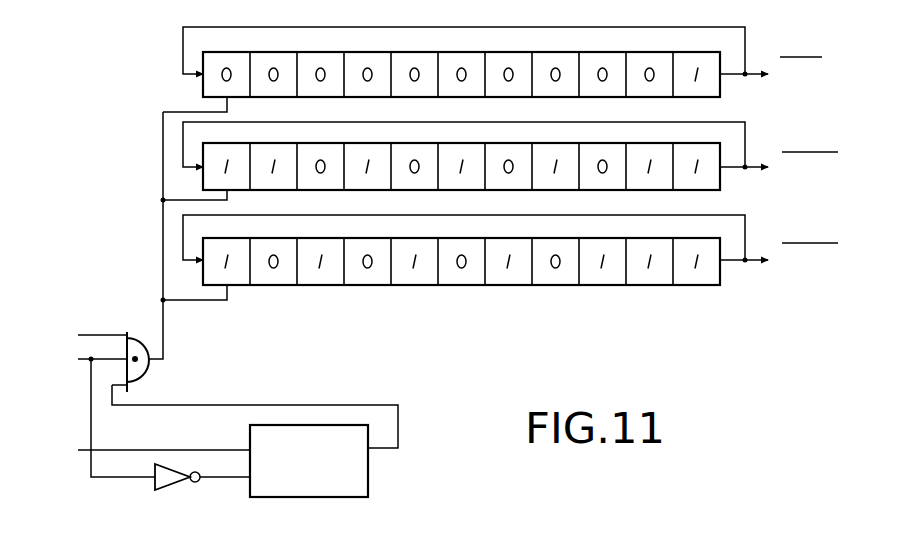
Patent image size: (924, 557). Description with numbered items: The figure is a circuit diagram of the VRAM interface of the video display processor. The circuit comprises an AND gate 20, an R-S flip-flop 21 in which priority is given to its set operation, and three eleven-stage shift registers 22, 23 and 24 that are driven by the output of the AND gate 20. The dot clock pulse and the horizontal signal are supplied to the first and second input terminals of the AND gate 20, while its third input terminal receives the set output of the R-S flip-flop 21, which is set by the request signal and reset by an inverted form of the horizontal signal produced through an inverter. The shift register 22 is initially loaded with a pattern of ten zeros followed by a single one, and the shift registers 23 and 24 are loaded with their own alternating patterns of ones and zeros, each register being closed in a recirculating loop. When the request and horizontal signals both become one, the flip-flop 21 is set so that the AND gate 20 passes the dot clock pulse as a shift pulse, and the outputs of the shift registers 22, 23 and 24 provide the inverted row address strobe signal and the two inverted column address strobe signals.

The AND gate 20 is at (150, 372).
The R-S flip-flop 21 is at (368, 487).
The shift register 22 is at (722, 84).
The shift register 23 is at (722, 178).
The shift register 24 is at (722, 272).